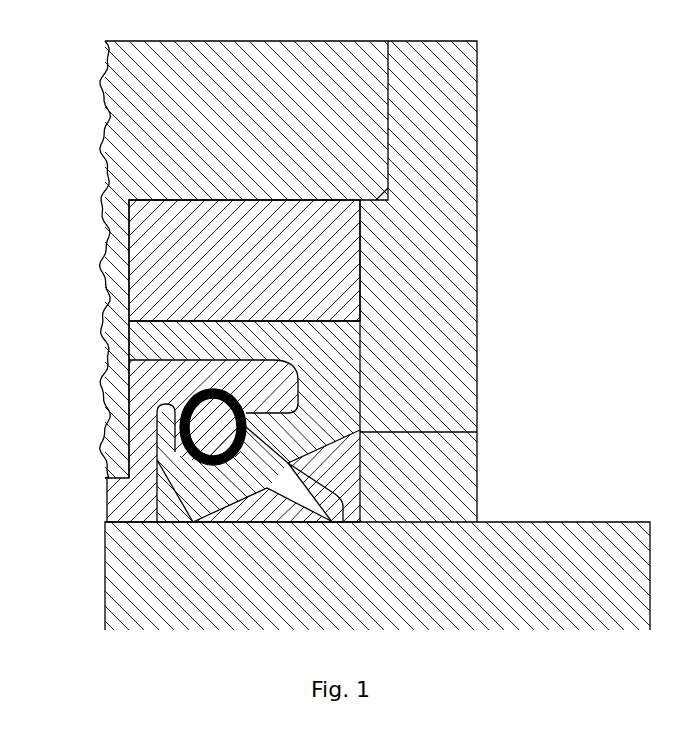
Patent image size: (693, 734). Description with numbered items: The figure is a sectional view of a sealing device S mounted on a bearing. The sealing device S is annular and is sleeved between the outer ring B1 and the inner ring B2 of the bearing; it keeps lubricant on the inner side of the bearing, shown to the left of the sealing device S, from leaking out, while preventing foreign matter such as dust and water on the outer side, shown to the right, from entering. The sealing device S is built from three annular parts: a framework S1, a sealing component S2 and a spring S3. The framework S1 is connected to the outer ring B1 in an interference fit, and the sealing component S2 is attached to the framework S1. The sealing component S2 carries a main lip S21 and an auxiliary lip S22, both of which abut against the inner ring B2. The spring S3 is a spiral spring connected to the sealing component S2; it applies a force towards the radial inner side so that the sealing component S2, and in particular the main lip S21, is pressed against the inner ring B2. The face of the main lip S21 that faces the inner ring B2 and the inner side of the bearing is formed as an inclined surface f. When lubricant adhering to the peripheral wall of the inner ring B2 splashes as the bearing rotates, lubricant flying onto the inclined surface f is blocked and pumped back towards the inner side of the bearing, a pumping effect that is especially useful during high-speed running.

The outer ring B1 is at (148, 127).
The inner ring B2 is at (170, 580).
The sealing device S is at (287, 363).
The framework S1 is at (150, 248).
The sealing component S2 is at (150, 341).
The spring S3 is at (190, 380).
The main lip S21 is at (188, 490).
The auxiliary lip S22 is at (335, 497).
The inclined surface f is at (178, 498).